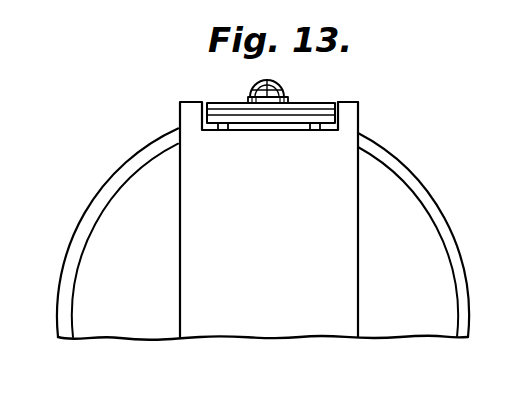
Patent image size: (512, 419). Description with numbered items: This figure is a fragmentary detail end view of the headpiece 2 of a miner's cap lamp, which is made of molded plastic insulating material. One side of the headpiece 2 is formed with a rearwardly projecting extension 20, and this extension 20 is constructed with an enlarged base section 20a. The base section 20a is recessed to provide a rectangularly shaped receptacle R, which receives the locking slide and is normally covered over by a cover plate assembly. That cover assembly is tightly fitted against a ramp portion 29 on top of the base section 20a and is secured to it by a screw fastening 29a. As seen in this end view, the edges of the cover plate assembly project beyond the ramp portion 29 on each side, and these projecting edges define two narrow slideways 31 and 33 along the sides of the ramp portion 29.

The headpiece 2 is at (392, 150).
The extension 20 is at (348, 253).
The enlarged base section 20a is at (358, 103).
The ramp portion 29 is at (272, 128).
The screw fastening 29a is at (267, 86).
The slideway 31 is at (221, 130).
The slideway 33 is at (322, 131).
The receptacle R is at (321, 104).